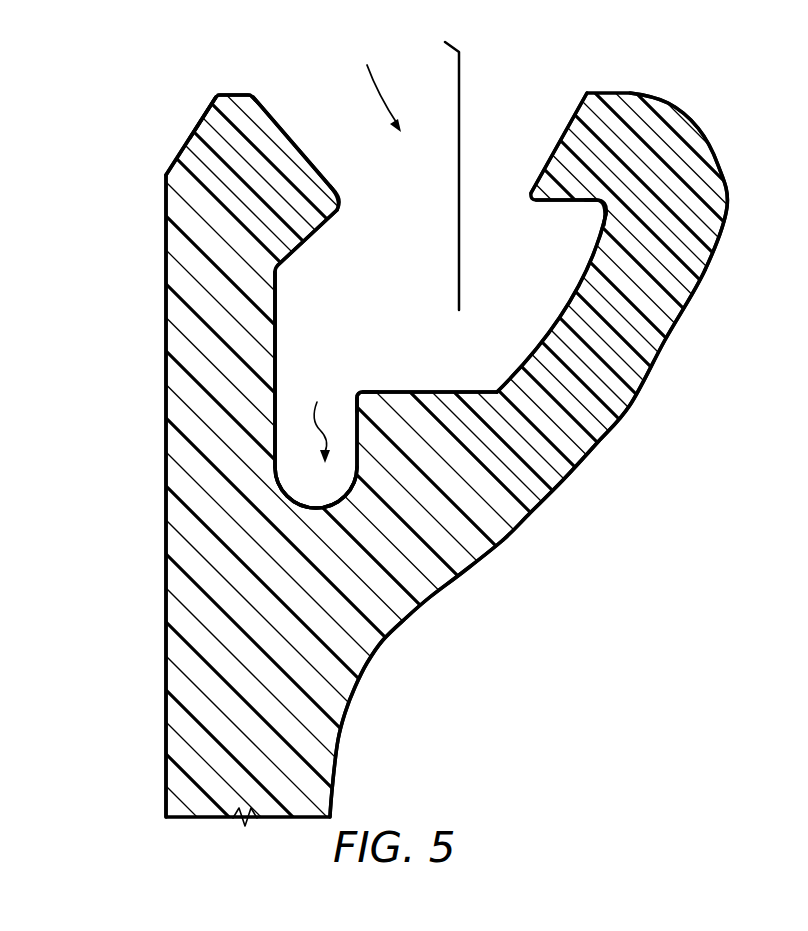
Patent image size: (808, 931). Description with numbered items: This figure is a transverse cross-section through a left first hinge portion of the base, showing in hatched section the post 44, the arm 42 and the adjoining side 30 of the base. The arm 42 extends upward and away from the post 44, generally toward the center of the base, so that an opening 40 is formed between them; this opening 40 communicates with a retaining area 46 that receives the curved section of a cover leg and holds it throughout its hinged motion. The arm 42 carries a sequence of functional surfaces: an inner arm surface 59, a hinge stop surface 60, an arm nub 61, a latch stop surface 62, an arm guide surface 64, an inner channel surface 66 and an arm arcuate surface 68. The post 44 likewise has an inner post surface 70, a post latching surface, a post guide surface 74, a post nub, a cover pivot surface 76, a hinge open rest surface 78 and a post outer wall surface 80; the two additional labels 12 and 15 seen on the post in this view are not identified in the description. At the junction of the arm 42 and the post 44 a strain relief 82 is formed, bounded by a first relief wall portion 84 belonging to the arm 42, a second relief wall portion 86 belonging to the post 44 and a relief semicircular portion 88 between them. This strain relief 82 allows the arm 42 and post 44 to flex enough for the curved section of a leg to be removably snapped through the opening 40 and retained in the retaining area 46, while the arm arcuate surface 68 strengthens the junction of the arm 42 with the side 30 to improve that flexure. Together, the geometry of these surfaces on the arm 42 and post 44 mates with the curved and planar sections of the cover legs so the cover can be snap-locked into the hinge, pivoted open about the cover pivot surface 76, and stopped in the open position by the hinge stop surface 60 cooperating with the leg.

The side 30 is at (178, 792).
The opening 40 is at (367, 85).
The arm 42 is at (705, 275).
The post 44 is at (180, 158).
The retaining area 46 is at (433, 168).
The inner arm surface 59 is at (557, 317).
The hinge stop surface 60 is at (593, 203).
The arm nub 61 is at (532, 202).
The latch stop surface 62 is at (433, 392).
The arm guide surface 64 is at (568, 120).
The inner channel surface 66 is at (632, 404).
The arm arcuate surface 68 is at (356, 685).
The inner post surface 70 is at (277, 311).
The inclined surface 12 is at (303, 243).
The corner 15 is at (340, 208).
The post guide surface 74 is at (278, 122).
The cover pivot surface 76 is at (235, 95).
The hinge open rest surface 78 is at (203, 118).
The post outer wall surface 80 is at (165, 215).
The strain relief 82 is at (336, 416).
The first relief wall portion 84 is at (358, 403).
The second relief wall portion 86 is at (278, 397).
The relief semicircular portion 88 is at (317, 503).